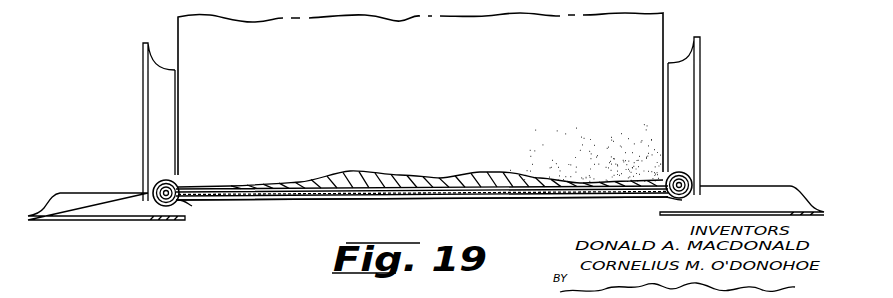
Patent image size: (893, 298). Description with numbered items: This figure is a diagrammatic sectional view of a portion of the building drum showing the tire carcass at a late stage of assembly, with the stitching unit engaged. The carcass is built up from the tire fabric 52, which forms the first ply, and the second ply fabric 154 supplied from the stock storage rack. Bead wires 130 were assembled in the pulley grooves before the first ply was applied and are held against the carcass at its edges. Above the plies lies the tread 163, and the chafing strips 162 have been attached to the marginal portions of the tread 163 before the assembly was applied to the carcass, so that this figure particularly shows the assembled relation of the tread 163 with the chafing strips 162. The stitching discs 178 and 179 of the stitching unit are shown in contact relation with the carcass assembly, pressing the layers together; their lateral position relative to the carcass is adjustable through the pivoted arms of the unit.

The stitching disc 178 is at (153, 109).
The stitching disc 179 is at (119, 178).
The chafing strip 162 is at (173, 207).
The tire fabric 52 is at (250, 200).
The bead wire 130 is at (175, 204).
The second ply fabric 154 is at (318, 200).
The tread 163 is at (356, 182).